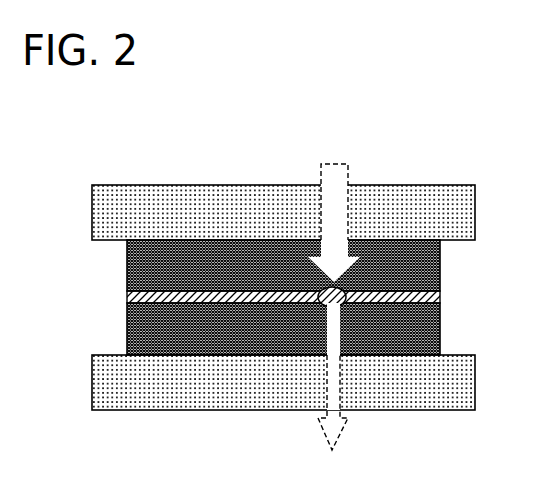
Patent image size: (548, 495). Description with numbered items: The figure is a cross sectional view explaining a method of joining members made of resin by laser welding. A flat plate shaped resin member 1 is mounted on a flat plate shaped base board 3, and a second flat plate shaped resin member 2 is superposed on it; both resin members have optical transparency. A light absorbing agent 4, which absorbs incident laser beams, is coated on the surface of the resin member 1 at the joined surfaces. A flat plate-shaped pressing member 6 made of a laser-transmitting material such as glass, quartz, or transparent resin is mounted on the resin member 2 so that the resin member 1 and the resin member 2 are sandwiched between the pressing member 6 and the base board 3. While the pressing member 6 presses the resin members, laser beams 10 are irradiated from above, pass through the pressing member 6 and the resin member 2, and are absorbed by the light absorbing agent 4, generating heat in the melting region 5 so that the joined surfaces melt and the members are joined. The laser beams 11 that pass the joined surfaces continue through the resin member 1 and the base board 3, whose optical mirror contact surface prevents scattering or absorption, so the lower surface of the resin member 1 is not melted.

The resin member 1 is at (441, 330).
The resin member 2 is at (441, 267).
The base board 3 is at (467, 378).
The light absorbing agent 4 is at (127, 295).
The melting region 5 is at (364, 287).
The pressing member 6 is at (466, 213).
The laser beams 10 is at (321, 171).
The laser beams having passed through the joined surfaces 11 is at (325, 430).